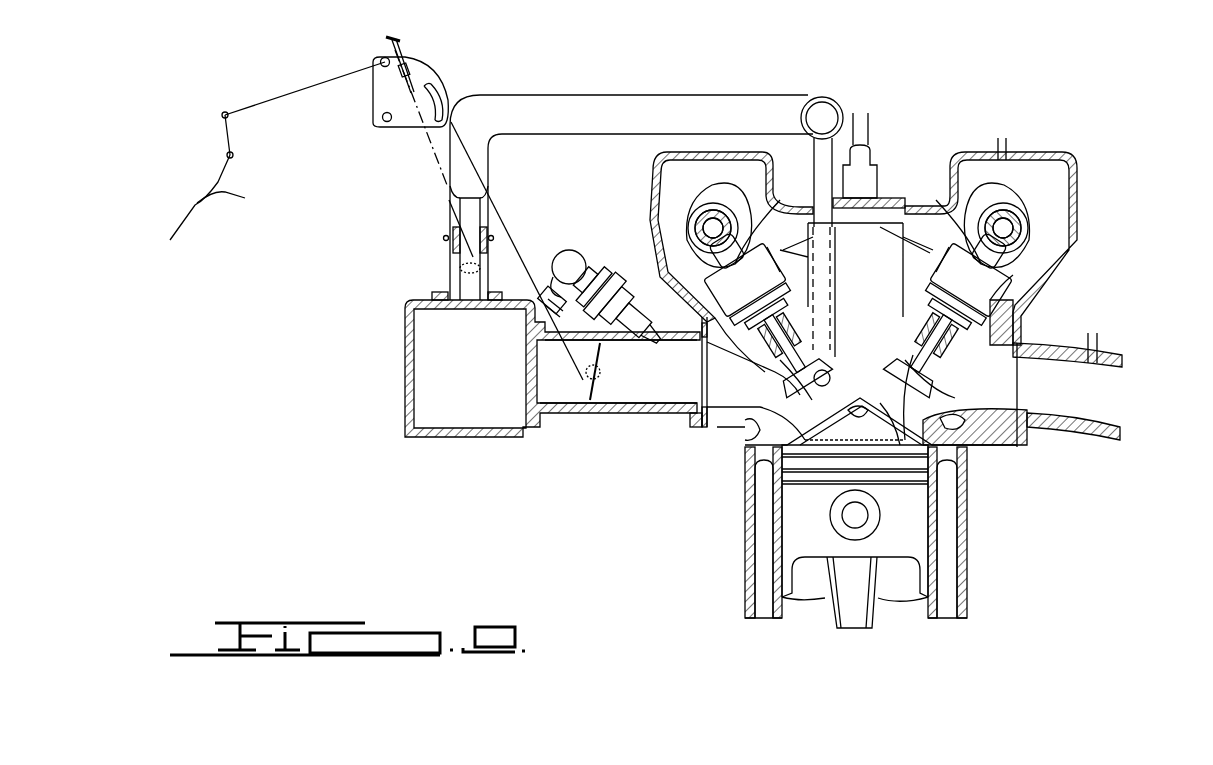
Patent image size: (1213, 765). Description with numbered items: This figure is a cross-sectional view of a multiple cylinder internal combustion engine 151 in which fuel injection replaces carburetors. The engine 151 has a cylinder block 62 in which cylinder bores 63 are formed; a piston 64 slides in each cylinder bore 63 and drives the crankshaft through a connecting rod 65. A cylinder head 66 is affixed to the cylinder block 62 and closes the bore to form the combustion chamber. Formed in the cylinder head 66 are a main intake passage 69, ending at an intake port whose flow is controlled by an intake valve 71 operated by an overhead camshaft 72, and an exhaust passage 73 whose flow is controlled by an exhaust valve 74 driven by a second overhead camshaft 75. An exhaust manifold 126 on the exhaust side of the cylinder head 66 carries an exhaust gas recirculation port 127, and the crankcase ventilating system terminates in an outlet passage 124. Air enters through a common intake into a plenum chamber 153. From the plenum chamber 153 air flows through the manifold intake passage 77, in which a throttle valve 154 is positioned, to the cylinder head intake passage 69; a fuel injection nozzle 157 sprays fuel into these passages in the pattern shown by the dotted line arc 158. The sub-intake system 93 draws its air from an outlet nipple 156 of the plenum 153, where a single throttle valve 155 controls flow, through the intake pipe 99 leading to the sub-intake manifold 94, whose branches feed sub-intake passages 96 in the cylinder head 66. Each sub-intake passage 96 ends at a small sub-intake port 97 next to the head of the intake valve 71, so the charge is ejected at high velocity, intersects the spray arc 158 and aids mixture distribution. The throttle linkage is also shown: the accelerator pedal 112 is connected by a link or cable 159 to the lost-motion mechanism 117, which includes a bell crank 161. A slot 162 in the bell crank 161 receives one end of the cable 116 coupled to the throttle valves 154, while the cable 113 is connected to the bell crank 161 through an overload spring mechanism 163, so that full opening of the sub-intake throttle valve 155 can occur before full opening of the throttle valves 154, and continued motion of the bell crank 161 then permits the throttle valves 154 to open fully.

The cylinder block 62 is at (972, 542).
The cylinder bore 63 is at (922, 597).
The piston 64 is at (800, 538).
The connecting rod 65 is at (820, 600).
The cylinder head 66 is at (1005, 318).
The intake passage 69 is at (720, 412).
The intake valve 71 is at (812, 332).
The overhead camshaft 72 is at (762, 200).
The exhaust passage 73 is at (1021, 399).
The exhaust valve 74 is at (912, 396).
The overhead camshaft 75 is at (1052, 220).
The intake passage 77 is at (637, 410).
The sub-intake system 93 is at (689, 76).
The sub-intake manifold 94 is at (843, 98).
The sub-intake passage 96 is at (838, 272).
The sub-intake port 97 is at (840, 370).
The intake pipe 99 is at (745, 97).
The accelerator pedal 112 is at (224, 177).
The main wire 113 is at (448, 160).
The actuating wire 116 is at (483, 122).
The connection 117 is at (428, 62).
The outlet passage 124 is at (1018, 142).
The exhaust manifold 126 is at (1122, 401).
The exhaust gas recirculation port 127 is at (1100, 339).
The engine 151 is at (996, 494).
The plenum chamber 153 is at (412, 451).
The throttle valve 154 is at (592, 406).
The throttle valve 155 is at (457, 265).
The outlet nipple 156 is at (468, 284).
The fuel injection nozzle 157 is at (630, 272).
The dotted line arc 158 is at (708, 382).
The link or cable 159 is at (298, 88).
The bell crank 161 is at (400, 122).
The slot 162 is at (440, 92).
The overload spring mechanism 163 is at (399, 58).